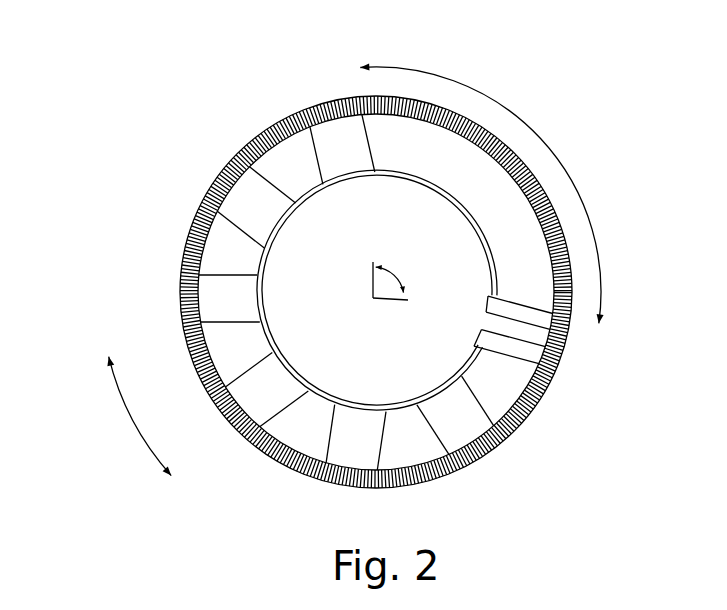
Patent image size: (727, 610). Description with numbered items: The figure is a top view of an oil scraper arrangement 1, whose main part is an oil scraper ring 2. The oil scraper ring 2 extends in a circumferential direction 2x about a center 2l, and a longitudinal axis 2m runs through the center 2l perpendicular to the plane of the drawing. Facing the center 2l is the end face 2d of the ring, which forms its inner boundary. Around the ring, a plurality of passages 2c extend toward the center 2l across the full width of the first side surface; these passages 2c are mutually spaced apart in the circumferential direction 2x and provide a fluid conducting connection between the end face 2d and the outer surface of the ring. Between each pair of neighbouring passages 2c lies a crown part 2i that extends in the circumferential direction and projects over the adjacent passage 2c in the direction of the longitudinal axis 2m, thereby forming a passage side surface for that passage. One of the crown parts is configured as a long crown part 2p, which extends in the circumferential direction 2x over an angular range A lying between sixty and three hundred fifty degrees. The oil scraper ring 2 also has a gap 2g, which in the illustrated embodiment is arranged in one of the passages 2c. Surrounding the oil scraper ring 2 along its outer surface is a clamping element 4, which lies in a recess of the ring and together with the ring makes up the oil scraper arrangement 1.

The oil scraper arrangement 1 is at (232, 120).
The oil scraper ring 2 is at (223, 360).
The passages 2c is at (318, 103).
The crown part 2i is at (303, 185).
The long crown part 2p is at (475, 200).
The end face 2d is at (461, 242).
The gap 2g is at (560, 350).
The center 2l is at (373, 299).
The longitudinal axis 2m is at (390, 299).
The circumferential direction 2x is at (130, 418).
The clamping element 4 is at (433, 477).
The angular range A is at (547, 150).